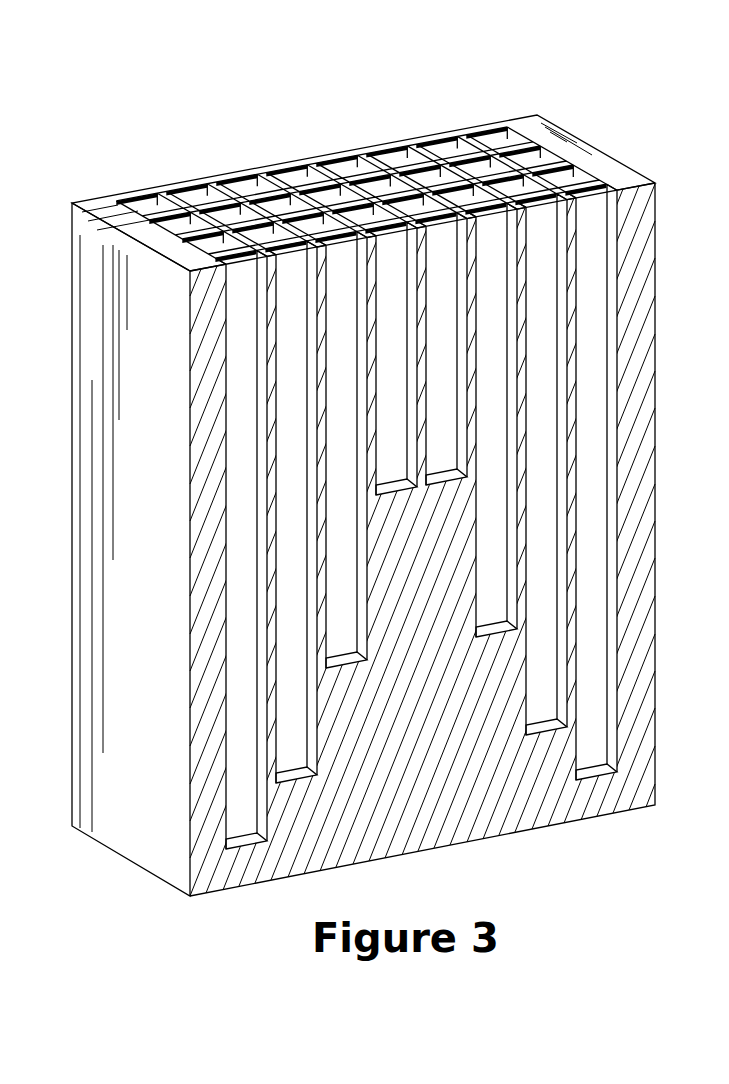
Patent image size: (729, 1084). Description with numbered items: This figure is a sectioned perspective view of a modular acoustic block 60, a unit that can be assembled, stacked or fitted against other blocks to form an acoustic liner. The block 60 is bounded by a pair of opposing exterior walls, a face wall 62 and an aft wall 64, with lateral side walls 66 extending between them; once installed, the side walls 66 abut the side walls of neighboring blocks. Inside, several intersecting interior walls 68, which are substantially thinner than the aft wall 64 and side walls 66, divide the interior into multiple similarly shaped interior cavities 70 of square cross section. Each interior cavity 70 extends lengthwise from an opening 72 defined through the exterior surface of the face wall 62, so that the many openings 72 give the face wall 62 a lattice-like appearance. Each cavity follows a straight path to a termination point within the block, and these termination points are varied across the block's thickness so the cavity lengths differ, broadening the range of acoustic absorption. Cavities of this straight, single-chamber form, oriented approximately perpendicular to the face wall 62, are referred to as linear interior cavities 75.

The modular acoustic block 60 is at (190, 83).
The face wall 62 is at (322, 164).
The aft wall 64 is at (258, 852).
The side walls 66 is at (636, 323).
The interior walls 68 is at (577, 280).
The interior cavities 70 is at (547, 253).
The opening 72 is at (240, 218).
The linear interior cavities 75 is at (593, 433).